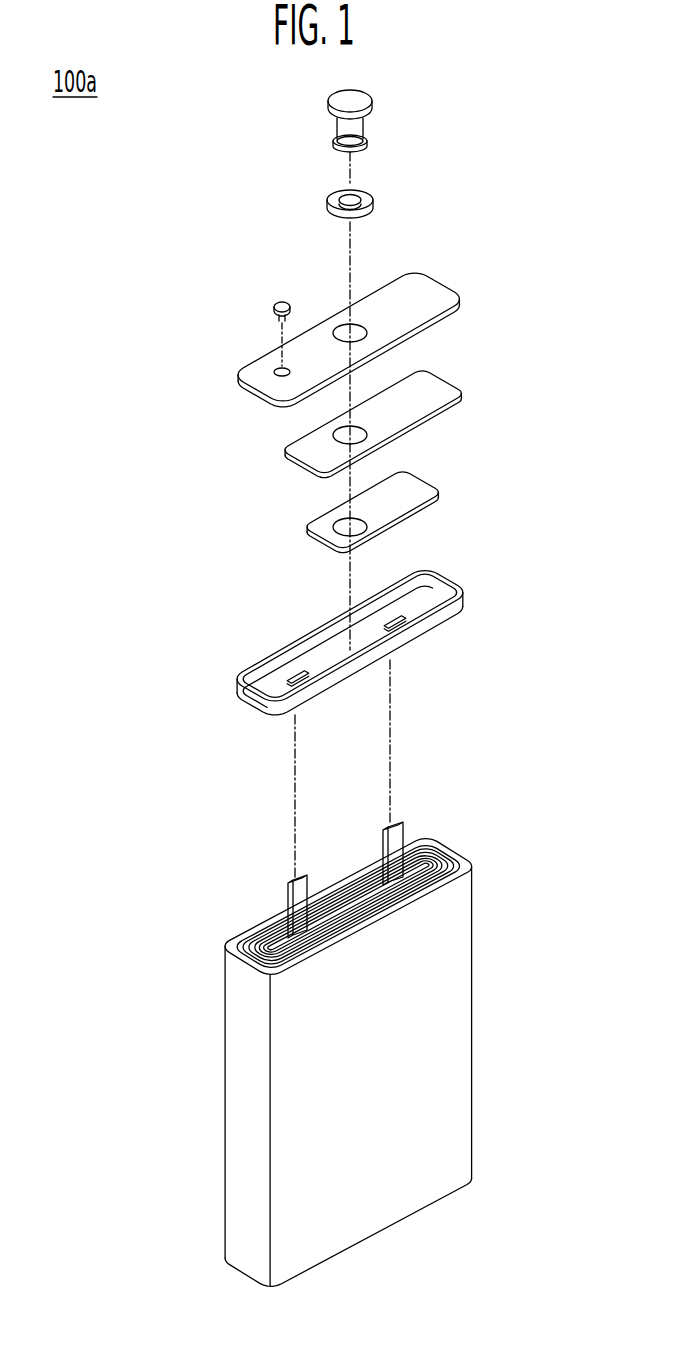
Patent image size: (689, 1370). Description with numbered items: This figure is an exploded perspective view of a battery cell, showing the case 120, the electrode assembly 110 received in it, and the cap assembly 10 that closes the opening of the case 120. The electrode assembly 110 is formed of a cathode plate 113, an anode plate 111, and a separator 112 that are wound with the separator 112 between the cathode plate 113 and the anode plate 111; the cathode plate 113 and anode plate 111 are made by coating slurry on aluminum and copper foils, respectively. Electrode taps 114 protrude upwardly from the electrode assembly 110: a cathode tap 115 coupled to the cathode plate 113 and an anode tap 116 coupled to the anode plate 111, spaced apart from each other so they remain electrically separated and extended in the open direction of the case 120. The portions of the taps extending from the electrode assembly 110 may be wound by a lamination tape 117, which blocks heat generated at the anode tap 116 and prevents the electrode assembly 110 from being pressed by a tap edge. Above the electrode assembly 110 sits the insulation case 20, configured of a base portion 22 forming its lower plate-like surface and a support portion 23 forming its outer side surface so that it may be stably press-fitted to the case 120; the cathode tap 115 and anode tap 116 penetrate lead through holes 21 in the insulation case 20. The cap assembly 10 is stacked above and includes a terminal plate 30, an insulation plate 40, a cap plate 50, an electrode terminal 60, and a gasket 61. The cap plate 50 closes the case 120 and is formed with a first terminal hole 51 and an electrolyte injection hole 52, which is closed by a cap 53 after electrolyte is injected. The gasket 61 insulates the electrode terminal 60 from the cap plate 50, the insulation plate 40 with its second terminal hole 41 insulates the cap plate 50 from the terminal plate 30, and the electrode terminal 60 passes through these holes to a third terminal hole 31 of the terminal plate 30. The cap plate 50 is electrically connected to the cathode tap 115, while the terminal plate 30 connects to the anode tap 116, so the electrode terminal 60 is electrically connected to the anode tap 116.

The cap assembly 10 is at (163, 215).
The insulation case 20 is at (324, 632).
The lead through holes 21 is at (297, 672).
The base portion 22 is at (427, 596).
The support portion 23 is at (247, 702).
The terminal plate 30 is at (390, 512).
The third terminal hole 31 is at (316, 533).
The insulation plate 40 is at (401, 433).
The second terminal hole 41 is at (322, 444).
The cap plate 50 is at (380, 316).
The first terminal hole 51 is at (345, 329).
The electrolyte injection hole 52 is at (280, 370).
The cap 53 is at (276, 304).
The electrode terminal 60 is at (362, 103).
The gasket 61 is at (338, 198).
The electrode assembly 110 is at (387, 857).
The anode plate 111 is at (460, 856).
The separator 112 is at (447, 844).
The cathode plate 113 is at (430, 834).
The electrode taps 114 is at (345, 843).
The cathode tap 115 is at (303, 887).
The anode tap 116 is at (390, 841).
The lamination tape 117 is at (271, 927).
The case 120 is at (463, 1040).